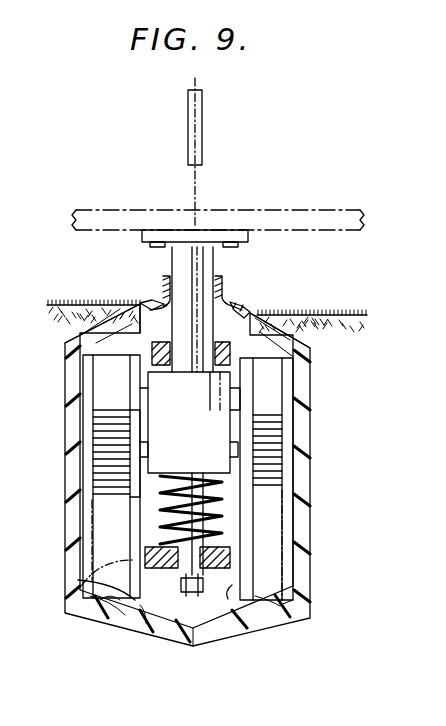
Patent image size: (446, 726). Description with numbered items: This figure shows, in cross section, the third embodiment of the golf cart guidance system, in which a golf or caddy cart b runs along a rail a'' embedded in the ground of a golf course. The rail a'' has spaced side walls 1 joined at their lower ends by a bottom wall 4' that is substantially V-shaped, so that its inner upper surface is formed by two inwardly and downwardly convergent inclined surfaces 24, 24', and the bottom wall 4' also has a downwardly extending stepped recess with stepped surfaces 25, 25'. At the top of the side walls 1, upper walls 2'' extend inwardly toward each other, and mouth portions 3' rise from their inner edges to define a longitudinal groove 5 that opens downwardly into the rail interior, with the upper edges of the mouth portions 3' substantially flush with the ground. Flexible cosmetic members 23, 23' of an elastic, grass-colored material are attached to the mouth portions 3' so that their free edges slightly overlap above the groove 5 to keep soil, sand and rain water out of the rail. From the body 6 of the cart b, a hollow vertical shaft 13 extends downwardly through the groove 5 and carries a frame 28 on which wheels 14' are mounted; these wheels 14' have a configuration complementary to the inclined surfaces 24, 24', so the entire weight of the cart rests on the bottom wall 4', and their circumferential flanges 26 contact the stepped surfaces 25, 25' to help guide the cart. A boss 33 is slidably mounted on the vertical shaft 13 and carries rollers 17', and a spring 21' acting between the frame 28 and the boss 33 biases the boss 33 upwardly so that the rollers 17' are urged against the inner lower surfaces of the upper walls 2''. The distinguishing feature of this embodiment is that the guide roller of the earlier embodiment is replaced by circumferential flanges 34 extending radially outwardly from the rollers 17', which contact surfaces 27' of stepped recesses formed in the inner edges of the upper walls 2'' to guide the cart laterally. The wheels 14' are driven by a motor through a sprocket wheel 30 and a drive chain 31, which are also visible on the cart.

The side walls 1 is at (205, 612).
The upper walls 2'' is at (312, 334).
The mouth portions 3' is at (231, 280).
The bottom wall 4' is at (300, 633).
The longitudinal groove 5 is at (150, 305).
The body 6 is at (270, 212).
The vertical shaft 13 is at (180, 250).
The wheels 14' is at (202, 613).
The rollers 17' is at (179, 422).
The spring 21' is at (160, 510).
The flexible cosmetic member 23 is at (139, 279).
The flexible cosmetic member 23' is at (265, 291).
The inclined surface 24 is at (268, 629).
The inclined surface 24' is at (102, 637).
The stepped surface 25 is at (254, 572).
The stepped surface 25' is at (160, 651).
The circumferential flanges 26 is at (73, 582).
The surfaces 27' is at (201, 349).
The frame 28 is at (153, 358).
The sprocket wheel 30 is at (188, 108).
The drive chain 31 is at (192, 178).
The boss 33 is at (146, 420).
The circumferential flanges 34 is at (130, 478).
The rail a'' is at (228, 475).
The golf or caddy cart b is at (349, 212).